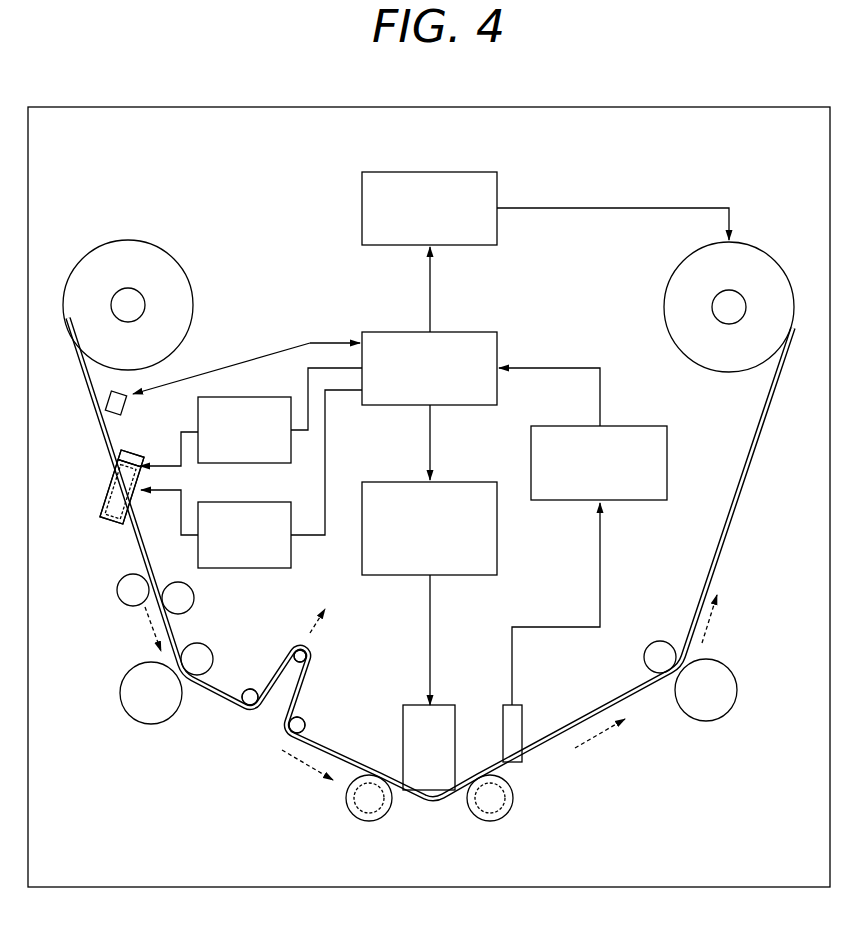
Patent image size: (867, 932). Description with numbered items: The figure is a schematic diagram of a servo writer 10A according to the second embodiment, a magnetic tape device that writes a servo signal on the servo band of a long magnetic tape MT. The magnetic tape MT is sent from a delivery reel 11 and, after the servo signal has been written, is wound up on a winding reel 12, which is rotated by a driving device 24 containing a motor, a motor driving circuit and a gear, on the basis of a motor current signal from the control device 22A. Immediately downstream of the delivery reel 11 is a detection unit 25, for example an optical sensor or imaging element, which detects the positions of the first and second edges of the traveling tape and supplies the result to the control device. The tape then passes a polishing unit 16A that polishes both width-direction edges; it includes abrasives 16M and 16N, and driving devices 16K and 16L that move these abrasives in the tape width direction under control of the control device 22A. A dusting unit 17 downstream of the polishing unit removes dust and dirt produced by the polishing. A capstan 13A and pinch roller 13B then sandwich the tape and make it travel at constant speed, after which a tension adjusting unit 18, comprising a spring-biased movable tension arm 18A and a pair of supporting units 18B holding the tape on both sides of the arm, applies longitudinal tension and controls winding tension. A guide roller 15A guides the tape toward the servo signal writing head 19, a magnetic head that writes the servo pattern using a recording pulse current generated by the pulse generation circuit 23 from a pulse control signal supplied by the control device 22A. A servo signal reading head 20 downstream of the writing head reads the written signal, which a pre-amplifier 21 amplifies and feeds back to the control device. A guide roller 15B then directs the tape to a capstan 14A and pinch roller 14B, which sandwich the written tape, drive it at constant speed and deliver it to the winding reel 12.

The servo writer 10A is at (594, 92).
The delivery reel 11 is at (193, 307).
The winding reel 12 is at (663, 308).
The driving device 24 is at (390, 171).
The control device 22A is at (391, 331).
The pulse generation circuit 23 is at (392, 480).
The pre-amplifier 21 is at (561, 425).
The driving device 16K is at (216, 397).
The driving device 16L is at (216, 501).
The detection unit 25 is at (127, 403).
The magnetic tape MT is at (99, 431).
The polishing unit 16A is at (79, 493).
The abrasive 16M is at (104, 459).
The abrasive 16N is at (119, 517).
The dusting unit 17 is at (112, 612).
The capstan 13A is at (214, 653).
The pinch roller 13B is at (156, 725).
The tension adjusting unit 18 is at (298, 626).
The tension arm 18A is at (310, 667).
The supporting units 18B is at (250, 706).
The servo signal writing head 19 is at (401, 722).
The servo signal reading head 20 is at (524, 717).
The guide roller 15A is at (368, 822).
The guide roller 15B is at (490, 822).
The capstan 14A is at (644, 659).
The pinch roller 14B is at (705, 722).